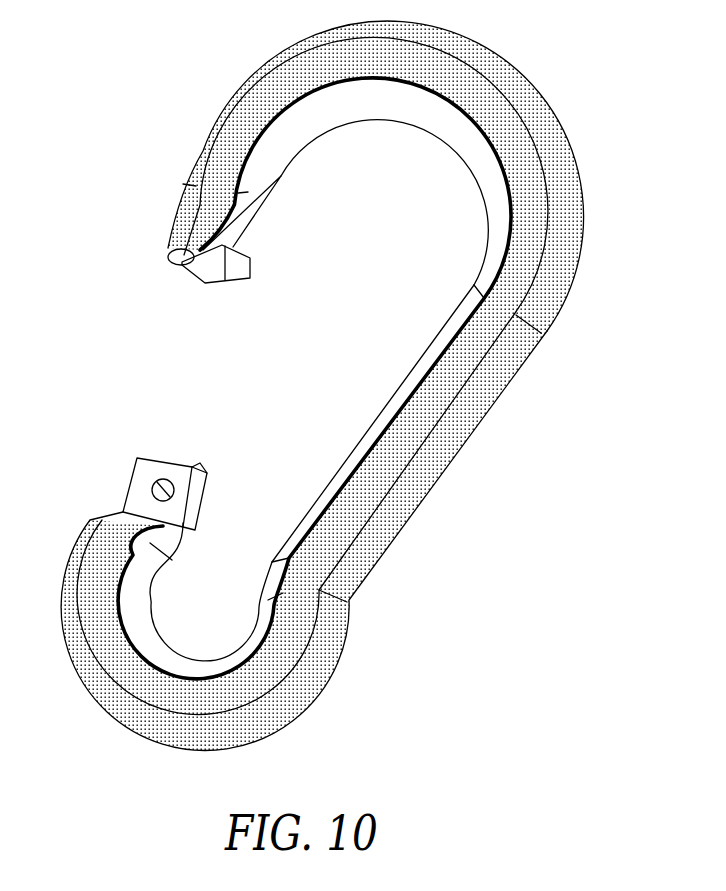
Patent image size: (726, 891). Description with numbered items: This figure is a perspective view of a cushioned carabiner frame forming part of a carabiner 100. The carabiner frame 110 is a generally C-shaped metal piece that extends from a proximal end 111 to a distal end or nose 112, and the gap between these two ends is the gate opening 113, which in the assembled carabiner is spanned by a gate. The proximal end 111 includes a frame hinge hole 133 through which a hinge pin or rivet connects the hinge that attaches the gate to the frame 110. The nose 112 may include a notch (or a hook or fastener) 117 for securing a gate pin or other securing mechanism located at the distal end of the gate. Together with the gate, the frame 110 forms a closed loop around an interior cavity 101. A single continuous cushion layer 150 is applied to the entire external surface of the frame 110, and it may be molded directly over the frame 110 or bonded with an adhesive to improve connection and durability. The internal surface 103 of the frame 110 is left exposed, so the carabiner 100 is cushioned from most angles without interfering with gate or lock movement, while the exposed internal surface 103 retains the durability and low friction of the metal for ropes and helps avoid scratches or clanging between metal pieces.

The carabiner 100 is at (531, 524).
The interior cavity 101 is at (390, 297).
The internal surface 103 is at (405, 395).
The carabiner frame 110 is at (313, 512).
The proximal end 111 is at (160, 458).
The nose or distal end 112 is at (193, 274).
The gate opening 113 is at (195, 354).
The notch 117 is at (252, 250).
The frame hinge hole 133 is at (152, 490).
The cushion layer 150 is at (220, 104).